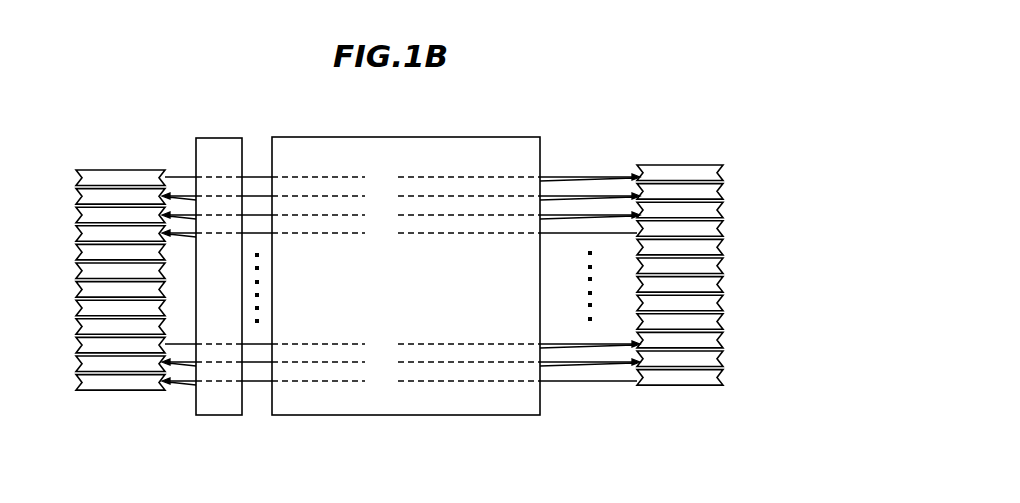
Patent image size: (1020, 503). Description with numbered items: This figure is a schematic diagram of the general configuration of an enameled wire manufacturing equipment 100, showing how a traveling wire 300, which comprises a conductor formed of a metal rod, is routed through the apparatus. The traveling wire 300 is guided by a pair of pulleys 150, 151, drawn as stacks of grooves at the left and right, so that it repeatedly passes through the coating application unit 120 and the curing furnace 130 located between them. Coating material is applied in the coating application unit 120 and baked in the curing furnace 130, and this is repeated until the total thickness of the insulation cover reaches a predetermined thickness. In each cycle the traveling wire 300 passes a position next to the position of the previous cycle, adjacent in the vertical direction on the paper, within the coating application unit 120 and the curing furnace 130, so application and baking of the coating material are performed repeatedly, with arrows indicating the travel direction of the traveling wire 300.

The enameled wire manufacturing equipment 100 is at (789, 277).
The coating application unit 120 is at (218, 416).
The curing furnace 130 is at (392, 416).
The pulley 150 is at (119, 393).
The pulley 151 is at (682, 390).
The traveling wire 300 is at (588, 382).